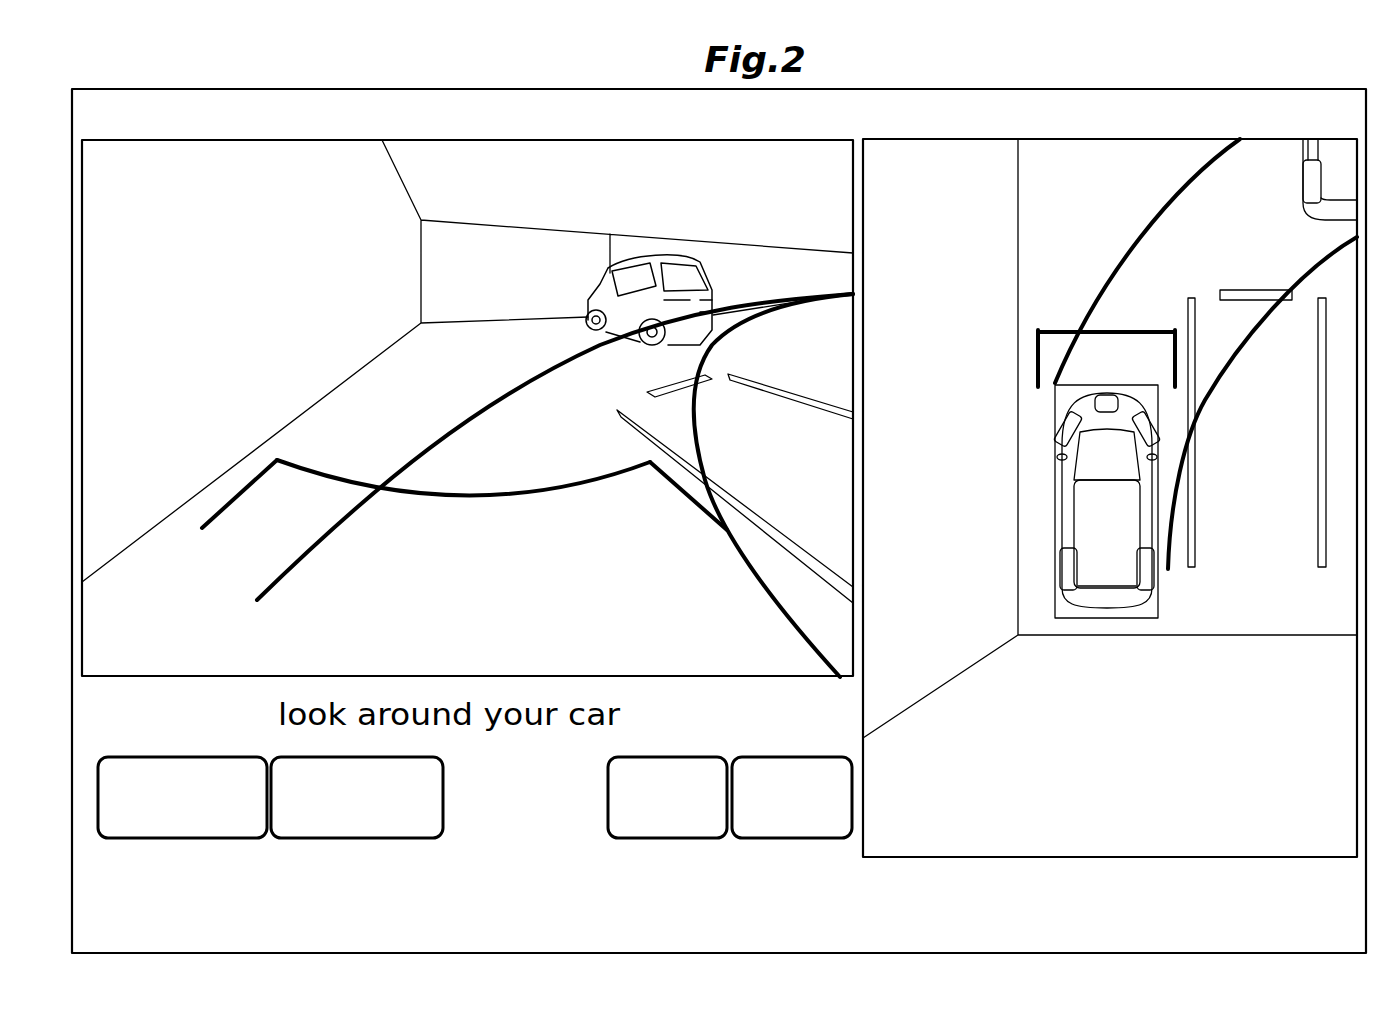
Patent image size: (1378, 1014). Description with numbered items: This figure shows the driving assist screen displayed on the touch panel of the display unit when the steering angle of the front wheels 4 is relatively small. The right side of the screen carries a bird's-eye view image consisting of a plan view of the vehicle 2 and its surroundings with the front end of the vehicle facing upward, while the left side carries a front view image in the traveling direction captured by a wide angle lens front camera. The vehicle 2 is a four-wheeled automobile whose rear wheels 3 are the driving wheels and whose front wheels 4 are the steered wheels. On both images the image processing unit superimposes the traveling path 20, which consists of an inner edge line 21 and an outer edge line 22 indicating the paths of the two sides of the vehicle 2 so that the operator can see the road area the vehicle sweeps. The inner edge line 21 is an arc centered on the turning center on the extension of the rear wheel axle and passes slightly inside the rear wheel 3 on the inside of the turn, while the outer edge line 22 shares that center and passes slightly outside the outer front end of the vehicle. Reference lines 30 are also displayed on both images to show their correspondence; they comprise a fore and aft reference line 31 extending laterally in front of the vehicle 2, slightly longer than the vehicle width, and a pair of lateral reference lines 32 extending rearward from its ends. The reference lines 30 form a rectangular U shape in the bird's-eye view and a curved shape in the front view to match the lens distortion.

The vehicle 2 is at (1063, 535).
The rear wheels 3 is at (1065, 570).
The front wheels 4 is at (1052, 439).
The traveling path 20 is at (807, 408).
The inner edge line 21 is at (700, 452).
The outer edge line 22 is at (485, 408).
The reference lines 30 is at (741, 431).
The fore and aft reference line 31 is at (573, 490).
The lateral reference lines 32 is at (230, 512).